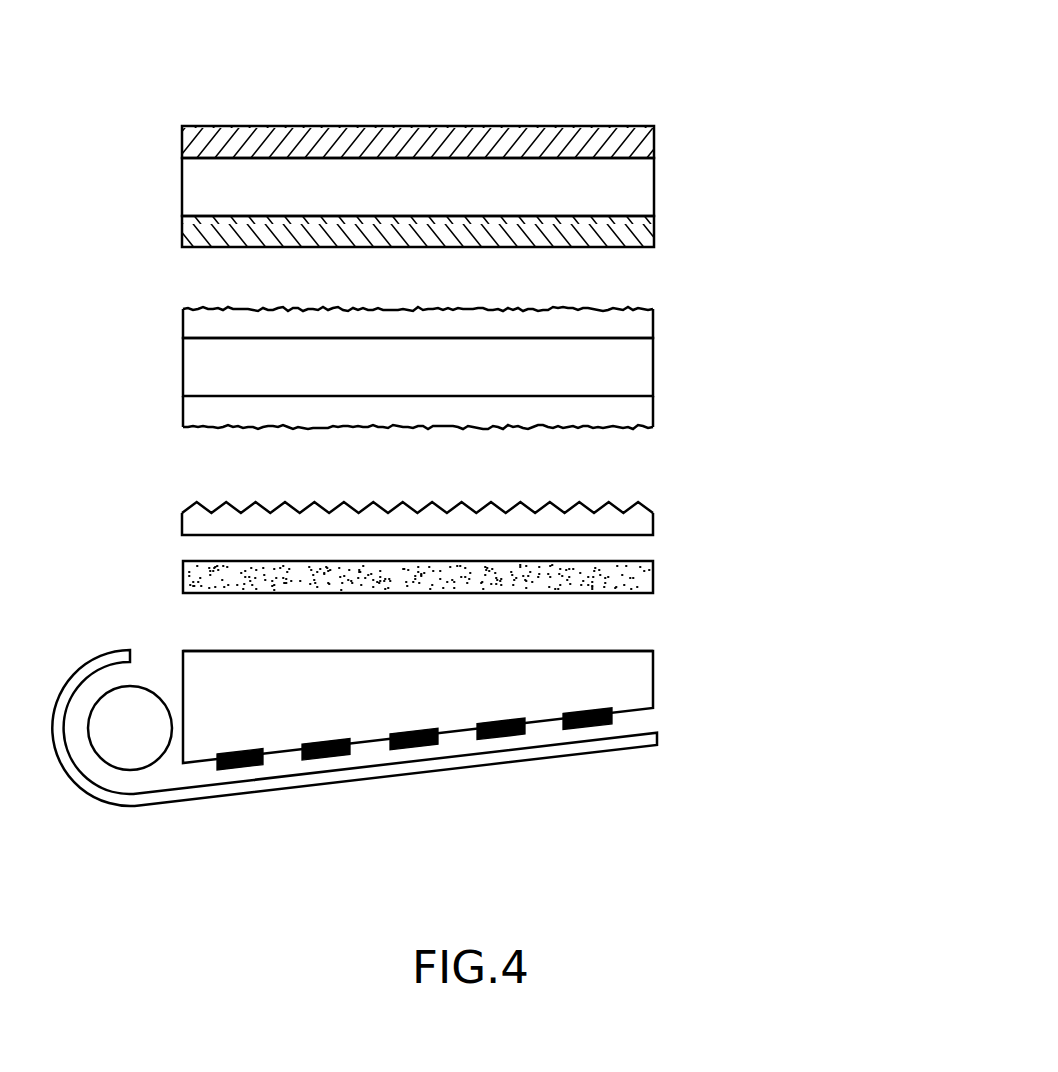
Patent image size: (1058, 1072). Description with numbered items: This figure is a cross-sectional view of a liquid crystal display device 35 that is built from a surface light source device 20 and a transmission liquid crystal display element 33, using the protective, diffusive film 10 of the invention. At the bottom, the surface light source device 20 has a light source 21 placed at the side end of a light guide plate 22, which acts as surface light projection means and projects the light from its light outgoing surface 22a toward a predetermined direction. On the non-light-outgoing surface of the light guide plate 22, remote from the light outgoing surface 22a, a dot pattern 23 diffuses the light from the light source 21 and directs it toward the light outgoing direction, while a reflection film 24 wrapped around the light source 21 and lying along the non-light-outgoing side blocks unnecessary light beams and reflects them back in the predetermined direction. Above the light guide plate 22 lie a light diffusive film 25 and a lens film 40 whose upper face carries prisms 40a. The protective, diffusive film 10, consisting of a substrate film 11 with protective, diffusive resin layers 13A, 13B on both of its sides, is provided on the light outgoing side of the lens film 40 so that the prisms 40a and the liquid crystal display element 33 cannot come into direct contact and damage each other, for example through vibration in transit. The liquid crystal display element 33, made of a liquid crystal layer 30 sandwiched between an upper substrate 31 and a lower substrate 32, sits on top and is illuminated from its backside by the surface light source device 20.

The liquid crystal display device 35 is at (583, 95).
The liquid crystal display element 33 is at (487, 186).
The upper substrate 31 is at (640, 143).
The liquid crystal layer 30 is at (640, 185).
The lower substrate 32 is at (455, 231).
The protective, diffusive film 10 is at (493, 368).
The protective, diffusive layer 13A is at (637, 327).
The substrate film 11 is at (637, 367).
The protective, diffusive layer 13B is at (463, 412).
The surface light source device 20 is at (459, 609).
The lens film 40 is at (464, 517).
The prism 40a is at (645, 505).
The light diffusive film 25 is at (653, 577).
The light guide plate 22 is at (457, 743).
The light outgoing surface 22a is at (635, 650).
The dot pattern 23 is at (413, 753).
The light source 21 is at (112, 752).
The reflection film 24 is at (590, 752).